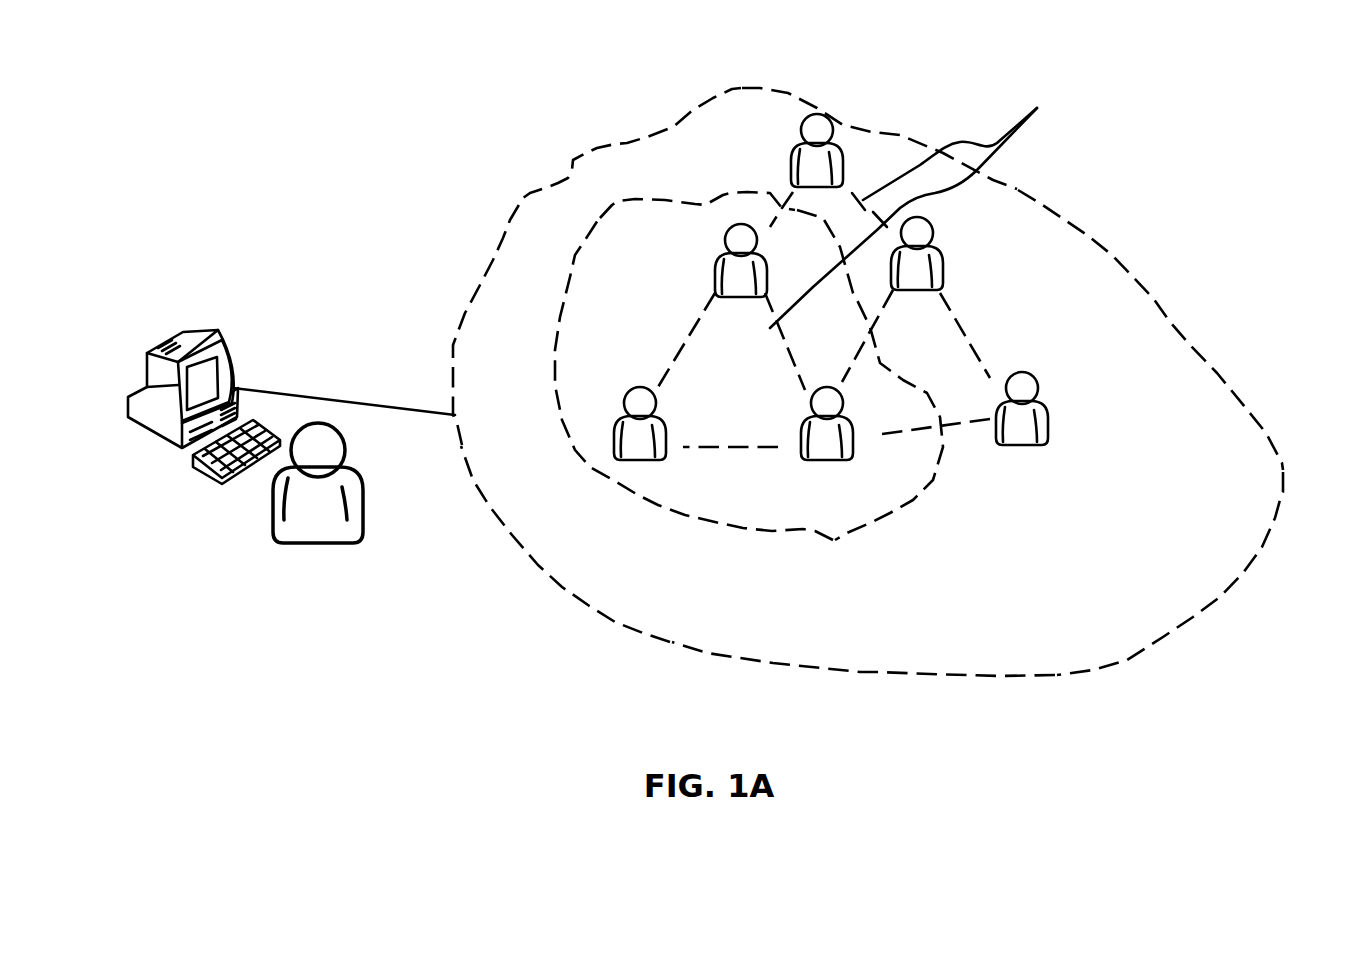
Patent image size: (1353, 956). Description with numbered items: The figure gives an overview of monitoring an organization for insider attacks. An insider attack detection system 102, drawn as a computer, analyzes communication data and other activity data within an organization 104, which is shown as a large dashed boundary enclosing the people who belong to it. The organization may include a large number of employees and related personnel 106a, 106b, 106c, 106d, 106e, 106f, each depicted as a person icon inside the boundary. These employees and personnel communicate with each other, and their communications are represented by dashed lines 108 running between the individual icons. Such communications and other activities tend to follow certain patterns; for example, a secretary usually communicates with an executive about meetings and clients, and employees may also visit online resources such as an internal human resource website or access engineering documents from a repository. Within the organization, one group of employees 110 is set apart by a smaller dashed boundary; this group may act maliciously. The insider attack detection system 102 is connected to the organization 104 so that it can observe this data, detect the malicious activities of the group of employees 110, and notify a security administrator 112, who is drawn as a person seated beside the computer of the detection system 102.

The insider attack detection system 102 is at (230, 347).
The organization 104 is at (1135, 658).
The employee 106a is at (717, 257).
The employee 106b is at (842, 147).
The employee 106c is at (933, 237).
The employee 106d is at (665, 425).
The employee 106e is at (853, 458).
The employee 106f is at (1050, 437).
The dashed lines 108 is at (910, 206).
The group of employees 110 is at (768, 530).
The security administrator 112 is at (353, 542).